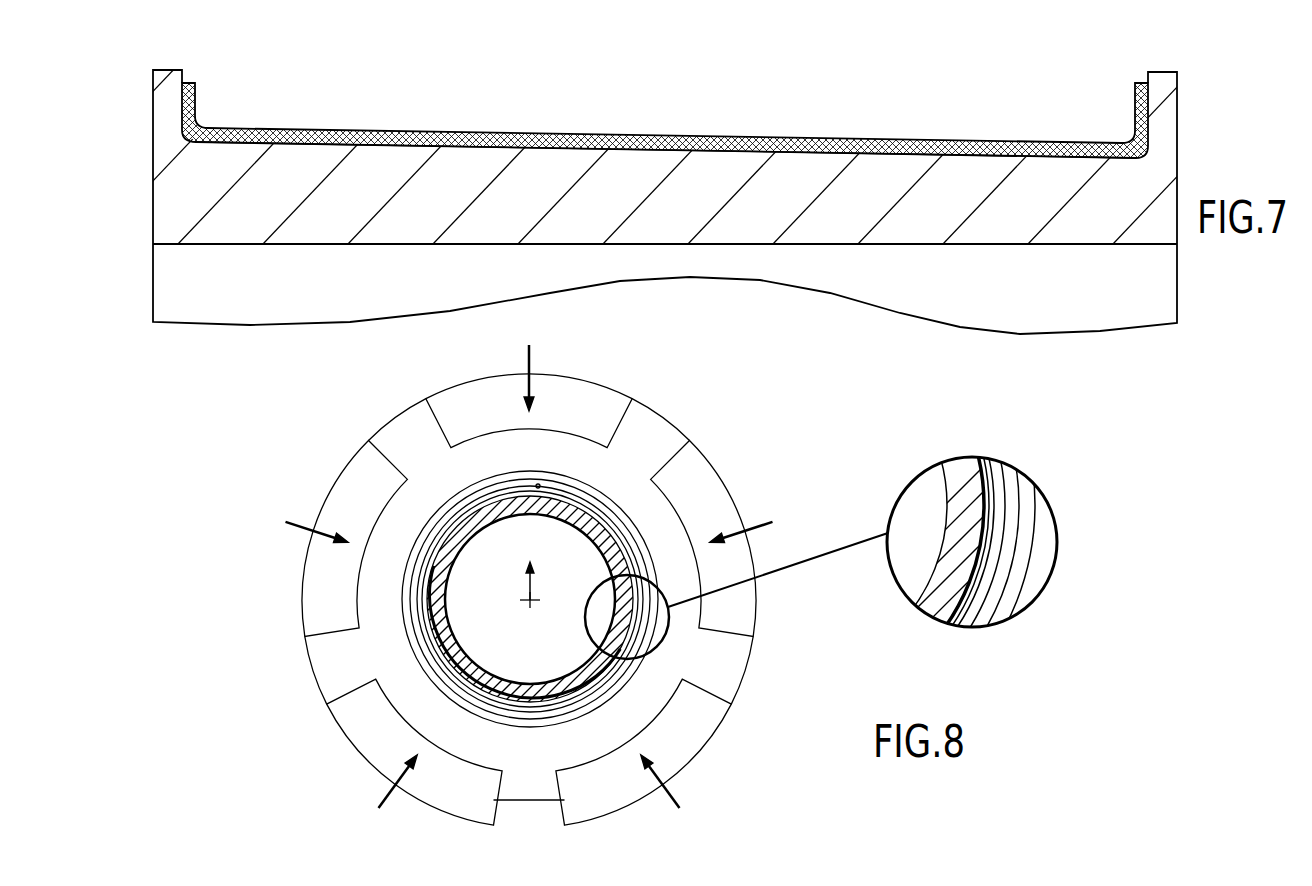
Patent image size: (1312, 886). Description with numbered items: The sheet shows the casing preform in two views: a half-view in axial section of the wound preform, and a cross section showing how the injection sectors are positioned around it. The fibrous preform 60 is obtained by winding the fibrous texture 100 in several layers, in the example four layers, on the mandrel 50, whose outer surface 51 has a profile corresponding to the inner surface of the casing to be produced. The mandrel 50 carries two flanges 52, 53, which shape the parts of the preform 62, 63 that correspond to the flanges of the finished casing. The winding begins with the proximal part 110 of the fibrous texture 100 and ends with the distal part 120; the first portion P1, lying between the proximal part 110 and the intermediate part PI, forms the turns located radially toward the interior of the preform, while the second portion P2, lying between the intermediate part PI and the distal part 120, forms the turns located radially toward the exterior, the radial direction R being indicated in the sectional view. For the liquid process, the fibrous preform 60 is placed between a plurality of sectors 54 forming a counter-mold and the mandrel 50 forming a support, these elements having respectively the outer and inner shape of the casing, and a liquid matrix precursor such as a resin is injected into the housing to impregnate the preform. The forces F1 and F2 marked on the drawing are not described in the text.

In FIG. 7, the mandrel 50 is at (1183, 160).
In FIG. 8, the mandrel 50 is at (532, 688).
In FIG. 7, the outer surface 51 is at (463, 148).
In FIG. 7, the flange 52 is at (1168, 100).
In FIG. 7, the flange 53 is at (165, 105).
In FIG. 8, the sectors 54 is at (600, 395).
In FIG. 7, the fibrous preform 60 is at (457, 107).
In FIG. 8, the fibrous preform 60 is at (612, 490).
In FIG. 7, the preform flange part 62 is at (1135, 102).
In FIG. 7, the preform flange part 63 is at (196, 100).
In FIG. 8, the fibrous texture 100 is at (465, 485).
In FIG. 8, the proximal part 110 is at (540, 500).
In FIG. 8, the distal part 120 is at (558, 474).
In FIG. 7, the first force F1 is at (367, 150).
In FIG. 8, the first force F1 is at (978, 523).
In FIG. 7, the second force F2 is at (355, 128).
In FIG. 8, the second force F2 is at (1028, 550).
In FIG. 8, the first portion P1 is at (552, 498).
In FIG. 8, the second portion P2 is at (588, 490).
In FIG. 8, the intermediate part PI is at (538, 484).
In FIG. 8, the radial direction R is at (528, 585).